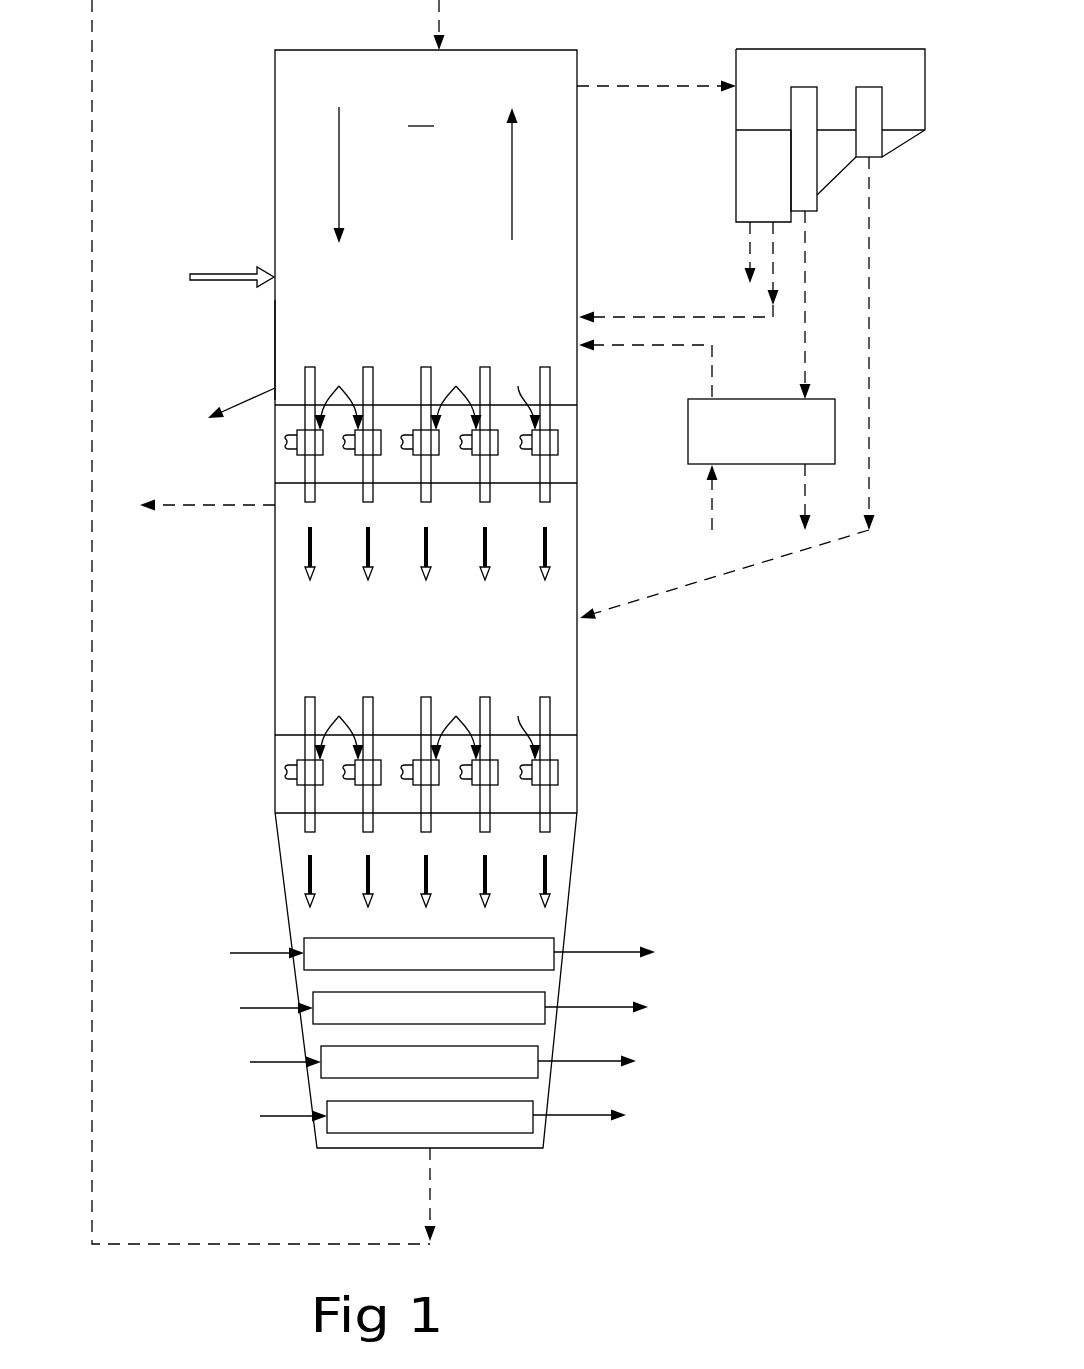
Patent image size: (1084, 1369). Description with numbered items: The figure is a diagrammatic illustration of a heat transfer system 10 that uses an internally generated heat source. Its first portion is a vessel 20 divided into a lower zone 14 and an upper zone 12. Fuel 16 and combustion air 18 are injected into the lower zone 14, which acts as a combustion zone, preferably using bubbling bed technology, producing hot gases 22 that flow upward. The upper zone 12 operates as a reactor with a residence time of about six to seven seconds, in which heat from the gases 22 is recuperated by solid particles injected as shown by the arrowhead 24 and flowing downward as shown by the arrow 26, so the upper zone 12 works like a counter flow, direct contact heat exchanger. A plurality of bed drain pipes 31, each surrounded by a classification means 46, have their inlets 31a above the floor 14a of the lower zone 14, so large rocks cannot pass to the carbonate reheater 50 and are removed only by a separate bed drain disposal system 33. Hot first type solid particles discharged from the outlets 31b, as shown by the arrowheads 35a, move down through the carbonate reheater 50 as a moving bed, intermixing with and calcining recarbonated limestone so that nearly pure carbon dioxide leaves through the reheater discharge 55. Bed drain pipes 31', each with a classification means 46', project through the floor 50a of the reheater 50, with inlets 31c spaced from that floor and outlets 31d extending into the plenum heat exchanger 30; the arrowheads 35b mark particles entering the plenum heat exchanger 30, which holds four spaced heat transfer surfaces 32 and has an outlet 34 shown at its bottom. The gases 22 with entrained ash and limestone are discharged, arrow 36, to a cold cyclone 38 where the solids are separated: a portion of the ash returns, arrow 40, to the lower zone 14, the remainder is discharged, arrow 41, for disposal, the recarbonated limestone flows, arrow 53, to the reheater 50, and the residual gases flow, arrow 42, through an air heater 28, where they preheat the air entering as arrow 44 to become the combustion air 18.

The heat transfer system 10 is at (825, 321).
The upper zone 12 is at (270, 185).
The lower zone 14 is at (270, 335).
The floor 14a is at (290, 406).
The fuel 16 is at (265, 270).
The combustion air 18 is at (596, 368).
The vessel 20 is at (428, 190).
The hot gases 22 is at (507, 178).
The solid particles injection arrowhead 24 is at (448, 24).
The downward flow arrow 26 is at (344, 178).
The air heater 28 is at (675, 432).
The plenum heat exchanger 30 is at (381, 866).
The bed drain pipes 31 is at (421, 434).
The inlet 31a is at (305, 367).
The outlet 31b is at (427, 552).
The inlet 31c is at (305, 697).
The outlet 31d is at (427, 881).
The bed drain pipes 31' is at (421, 764).
The heat transfer surfaces 32 is at (570, 963).
The bed drain disposal system 33 is at (240, 397).
The bottom solids outlet 34 is at (432, 1183).
The discharge arrowheads 35a is at (313, 558).
The discharged solids 35b is at (313, 880).
The discharge arrow 36 is at (720, 76).
The cold cyclone 38 is at (864, 44).
The ash return arrow 40 is at (595, 300).
The ash discharge arrow 41 is at (735, 270).
The residual gases flow 42 is at (790, 388).
The air inlet arrow 44 is at (698, 477).
The classification means 46 is at (428, 396).
The classification means 46' is at (428, 727).
The carbonate reheater 50 is at (381, 674).
The floor 50a is at (290, 736).
The recarbonated limestone flow 53 is at (600, 635).
The reheater discharge arrow 55 is at (155, 500).